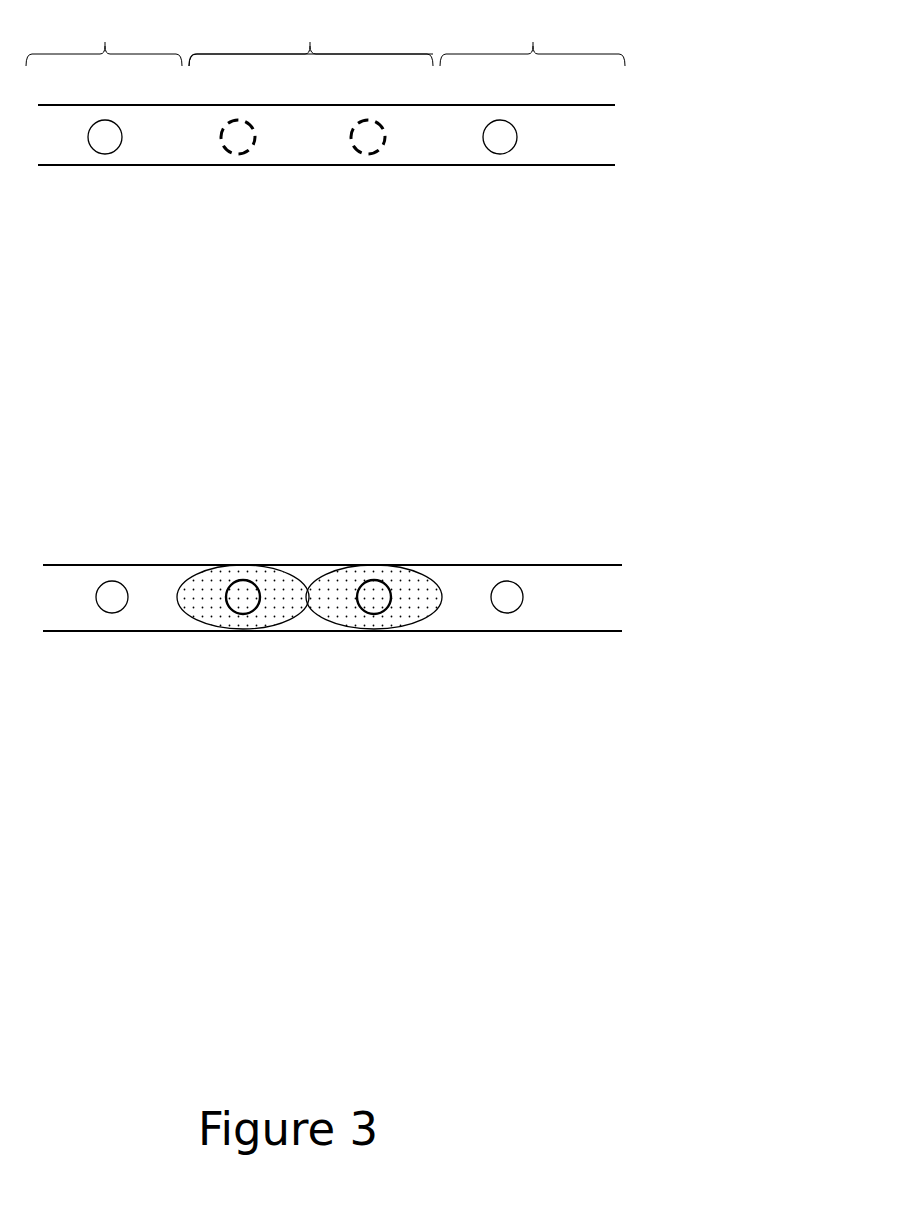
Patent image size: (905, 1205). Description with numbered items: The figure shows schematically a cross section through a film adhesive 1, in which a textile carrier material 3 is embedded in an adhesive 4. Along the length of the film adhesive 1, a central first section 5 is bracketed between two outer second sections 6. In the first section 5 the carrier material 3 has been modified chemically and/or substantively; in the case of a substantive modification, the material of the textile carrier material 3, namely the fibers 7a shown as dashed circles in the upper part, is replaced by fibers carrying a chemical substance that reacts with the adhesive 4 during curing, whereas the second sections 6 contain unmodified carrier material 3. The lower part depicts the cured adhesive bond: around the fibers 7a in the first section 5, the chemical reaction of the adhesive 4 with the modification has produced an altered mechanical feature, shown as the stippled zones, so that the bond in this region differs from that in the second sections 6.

The film adhesive 1 is at (618, 205).
The textile carrier material 3 is at (518, 148).
The adhesive 4 is at (170, 150).
The first section 5 is at (311, 37).
The second sections 6 is at (325, 37).
The fibers 7a is at (358, 160).